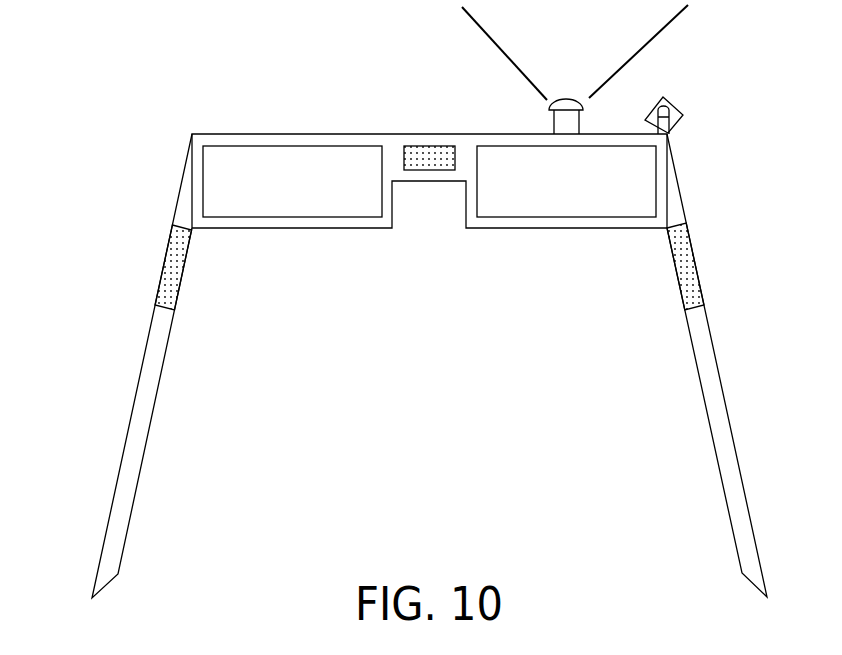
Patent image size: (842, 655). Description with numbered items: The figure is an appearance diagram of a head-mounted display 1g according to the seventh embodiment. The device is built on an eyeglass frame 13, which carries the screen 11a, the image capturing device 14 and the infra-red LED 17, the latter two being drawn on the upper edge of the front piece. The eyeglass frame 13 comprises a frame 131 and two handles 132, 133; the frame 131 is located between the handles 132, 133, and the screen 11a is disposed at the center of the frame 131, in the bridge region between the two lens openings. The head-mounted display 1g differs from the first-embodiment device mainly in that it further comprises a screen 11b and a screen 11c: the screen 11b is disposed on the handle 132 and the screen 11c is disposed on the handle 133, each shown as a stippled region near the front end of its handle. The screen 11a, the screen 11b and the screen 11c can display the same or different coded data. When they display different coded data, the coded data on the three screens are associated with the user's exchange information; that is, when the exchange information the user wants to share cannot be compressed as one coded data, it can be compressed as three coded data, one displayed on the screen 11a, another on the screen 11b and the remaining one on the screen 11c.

The head-mounted display 1g is at (84, 32).
The eyeglass frame 13 is at (192, 134).
The frame 131 is at (321, 140).
The handle 132 is at (703, 350).
The handle 133 is at (158, 340).
The screen 11a is at (432, 153).
The screen 11b is at (692, 272).
The screen 11c is at (173, 272).
The image capturing device 14 is at (566, 100).
The infra-red LED 17 is at (663, 97).